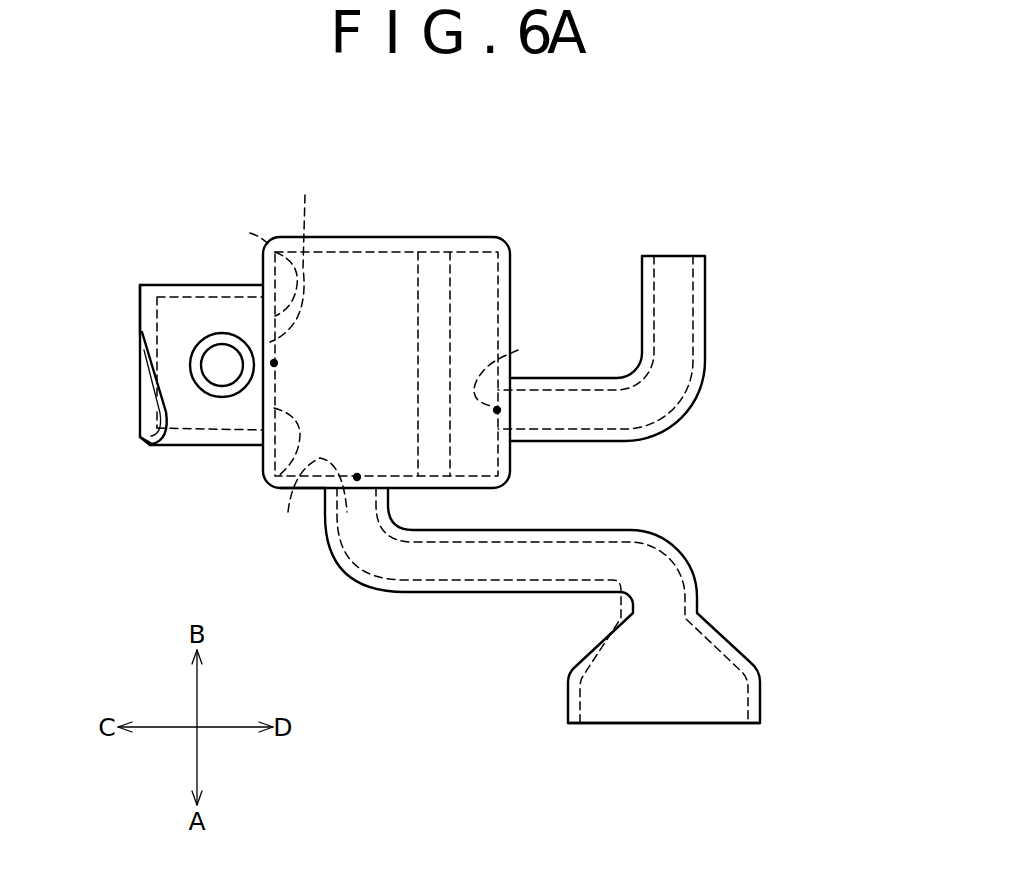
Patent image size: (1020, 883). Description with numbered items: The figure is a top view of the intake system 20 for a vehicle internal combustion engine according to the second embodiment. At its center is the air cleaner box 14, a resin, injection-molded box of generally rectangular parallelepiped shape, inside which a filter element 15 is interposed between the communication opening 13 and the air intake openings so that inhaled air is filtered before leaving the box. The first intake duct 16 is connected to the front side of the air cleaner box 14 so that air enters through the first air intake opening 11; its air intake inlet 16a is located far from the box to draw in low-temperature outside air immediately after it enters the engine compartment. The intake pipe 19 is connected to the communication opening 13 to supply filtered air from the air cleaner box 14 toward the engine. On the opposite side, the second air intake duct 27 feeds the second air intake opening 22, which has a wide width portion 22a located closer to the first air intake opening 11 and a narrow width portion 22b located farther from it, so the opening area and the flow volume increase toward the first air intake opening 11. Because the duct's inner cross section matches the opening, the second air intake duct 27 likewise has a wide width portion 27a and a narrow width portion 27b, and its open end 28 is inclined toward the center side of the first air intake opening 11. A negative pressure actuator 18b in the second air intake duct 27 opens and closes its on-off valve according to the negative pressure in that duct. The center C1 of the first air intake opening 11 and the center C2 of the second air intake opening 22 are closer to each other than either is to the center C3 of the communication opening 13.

The intake system 20 is at (683, 185).
The air cleaner box 14 is at (350, 238).
The filter element 15 is at (430, 262).
The second air intake opening 22 is at (286, 253).
The narrow width portion 22b is at (267, 242).
The wide width portion 22a is at (270, 480).
The first air intake opening 11 is at (300, 493).
The center of the second air intake opening C2 is at (274, 363).
The center of the first air intake opening C1 is at (357, 476).
The center of the communication opening C3 is at (496, 410).
The communication opening 13 is at (518, 350).
The intake pipe 19 is at (705, 322).
The first intake duct 16 is at (428, 594).
The air intake inlet 16a is at (650, 724).
The second air intake duct 27 is at (172, 283).
The narrow width portion 27b is at (140, 322).
The wide width portion 27a is at (150, 418).
The open end 28 is at (143, 444).
The negative pressure actuator 18b is at (222, 372).